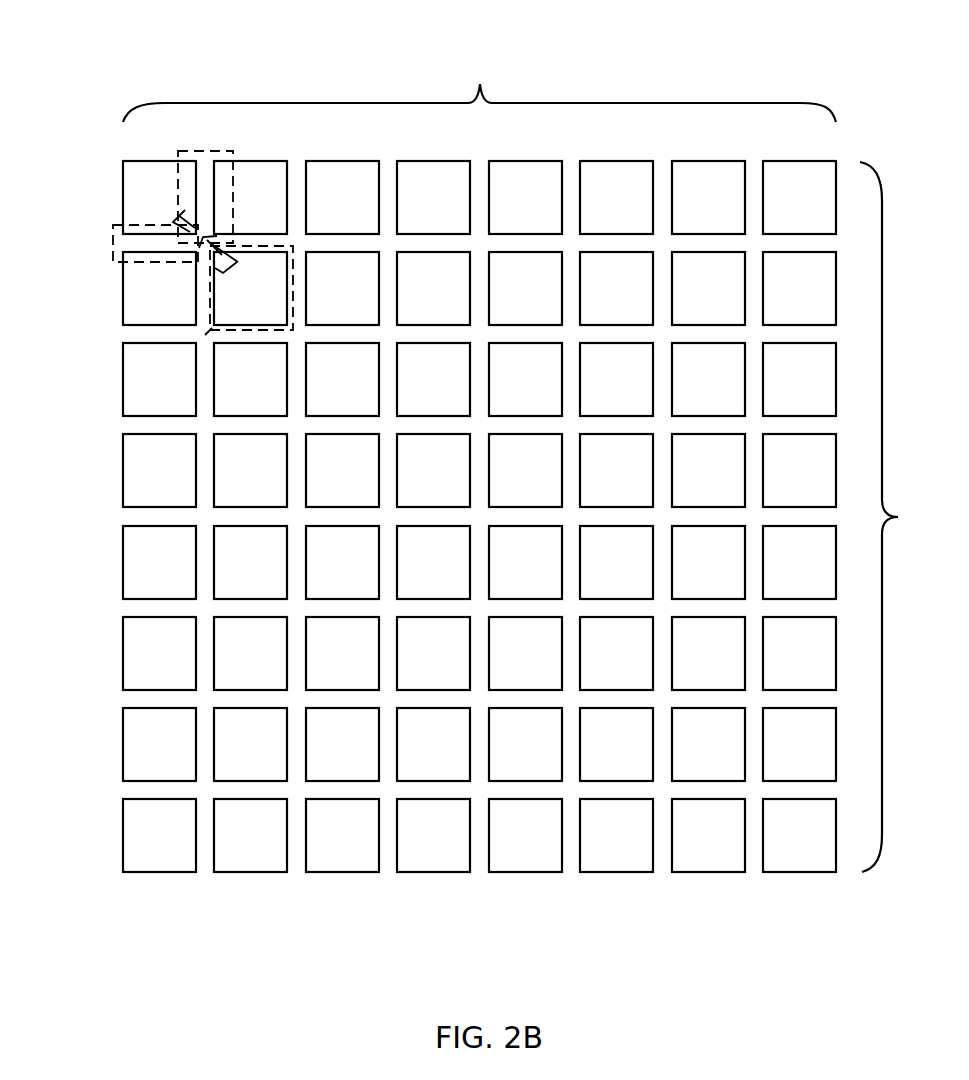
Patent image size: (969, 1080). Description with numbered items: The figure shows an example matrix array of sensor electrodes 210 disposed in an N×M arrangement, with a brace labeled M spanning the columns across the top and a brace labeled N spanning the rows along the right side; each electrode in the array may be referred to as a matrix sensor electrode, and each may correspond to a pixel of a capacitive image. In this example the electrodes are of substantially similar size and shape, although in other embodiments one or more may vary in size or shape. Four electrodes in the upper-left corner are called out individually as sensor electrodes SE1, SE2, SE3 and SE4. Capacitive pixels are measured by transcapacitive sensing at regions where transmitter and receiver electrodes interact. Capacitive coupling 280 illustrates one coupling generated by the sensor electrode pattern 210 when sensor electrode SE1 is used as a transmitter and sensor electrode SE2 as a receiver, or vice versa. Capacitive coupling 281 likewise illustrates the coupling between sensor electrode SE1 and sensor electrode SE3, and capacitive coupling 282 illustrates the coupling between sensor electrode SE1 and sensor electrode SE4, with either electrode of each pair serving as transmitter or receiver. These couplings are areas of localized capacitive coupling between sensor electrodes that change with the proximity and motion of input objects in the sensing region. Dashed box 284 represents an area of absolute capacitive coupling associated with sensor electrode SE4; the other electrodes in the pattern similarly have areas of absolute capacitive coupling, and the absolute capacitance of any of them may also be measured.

The sensor electrodes 210 is at (92, 46).
The sensor electrode SE1 is at (143, 161).
The sensor electrode SE2 is at (253, 161).
The sensor electrode SE3 is at (123, 299).
The sensor electrode SE4 is at (214, 324).
The capacitive coupling 280 is at (191, 152).
The capacitive coupling 281 is at (112, 232).
The capacitive coupling 282 is at (213, 271).
The dashed box 284 is at (210, 330).
The number of columns of the matrix array M is at (479, 89).
The number of rows of the matrix array N is at (891, 517).